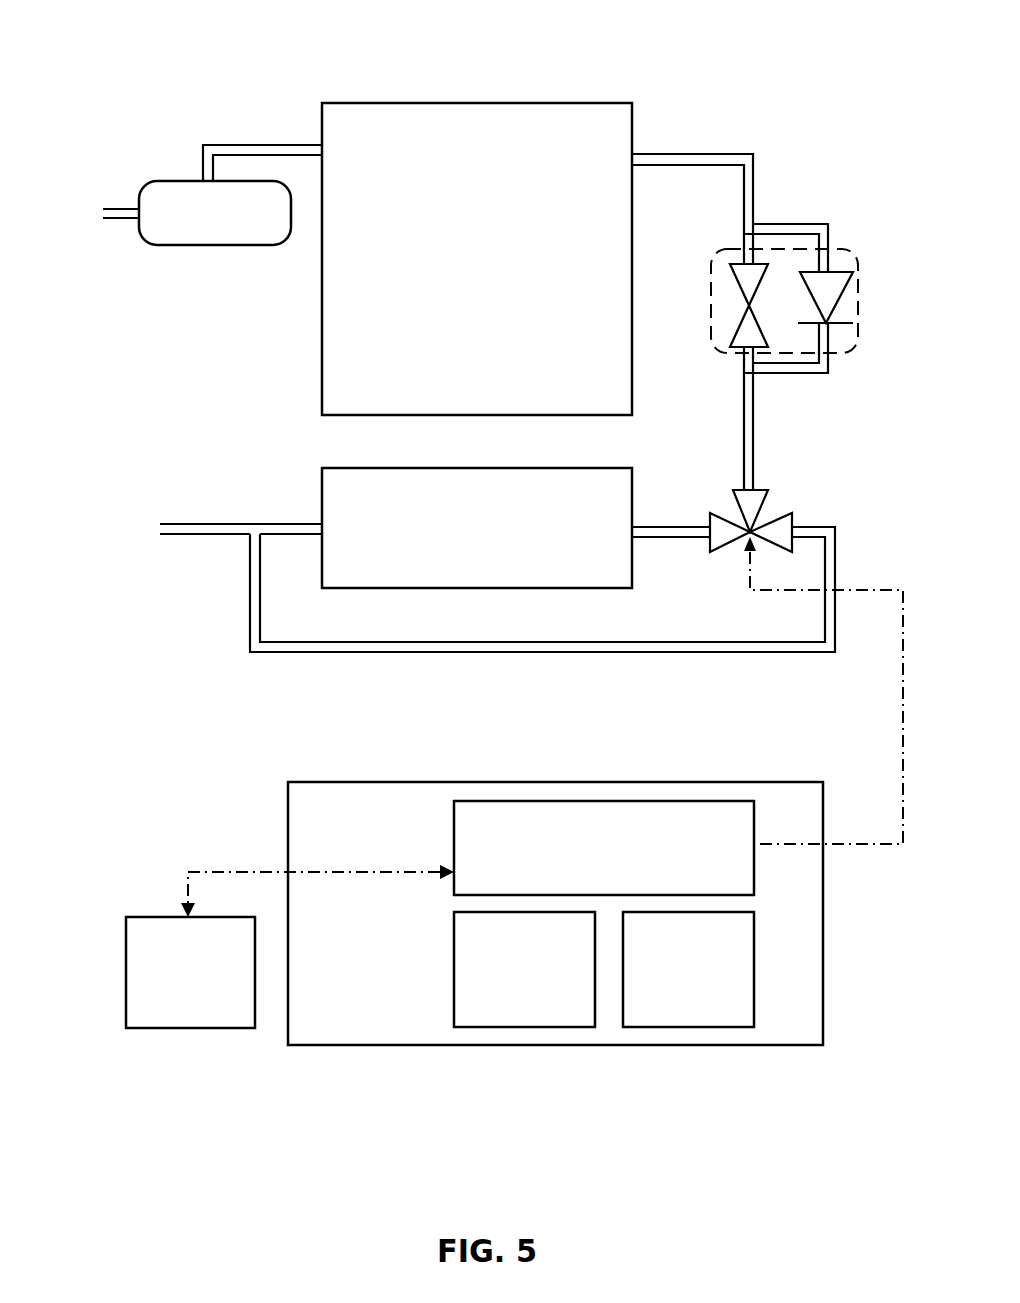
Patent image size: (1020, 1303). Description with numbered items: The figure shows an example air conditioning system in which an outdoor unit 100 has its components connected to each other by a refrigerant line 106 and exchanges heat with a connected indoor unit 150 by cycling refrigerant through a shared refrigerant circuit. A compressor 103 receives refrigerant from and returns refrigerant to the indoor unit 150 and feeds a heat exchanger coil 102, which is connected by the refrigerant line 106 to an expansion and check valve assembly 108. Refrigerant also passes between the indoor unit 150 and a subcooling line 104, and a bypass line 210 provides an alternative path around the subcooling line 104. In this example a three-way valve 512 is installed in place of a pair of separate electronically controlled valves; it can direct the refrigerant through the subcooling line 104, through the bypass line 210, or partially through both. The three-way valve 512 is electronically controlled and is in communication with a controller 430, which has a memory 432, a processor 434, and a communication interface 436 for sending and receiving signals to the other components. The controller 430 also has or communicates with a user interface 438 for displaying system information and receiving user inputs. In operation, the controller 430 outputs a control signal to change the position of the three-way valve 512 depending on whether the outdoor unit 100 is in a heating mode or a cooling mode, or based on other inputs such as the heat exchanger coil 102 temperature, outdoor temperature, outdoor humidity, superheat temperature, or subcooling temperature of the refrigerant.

The outdoor unit 100 is at (297, 42).
The heat exchanger coil 102 is at (457, 287).
The compressor 103 is at (195, 239).
The subcooling line 104 is at (457, 556).
The refrigerant line 106 is at (710, 153).
The expansion and check valve assembly 108 is at (858, 266).
The indoor unit 150 is at (30, 285).
The bypass line 210 is at (652, 641).
The three-way valve 512 is at (778, 513).
The controller 430 is at (350, 956).
The memory 432 is at (504, 997).
The processor 434 is at (669, 997).
The communication interface 436 is at (583, 875).
The user interface 438 is at (170, 1015).